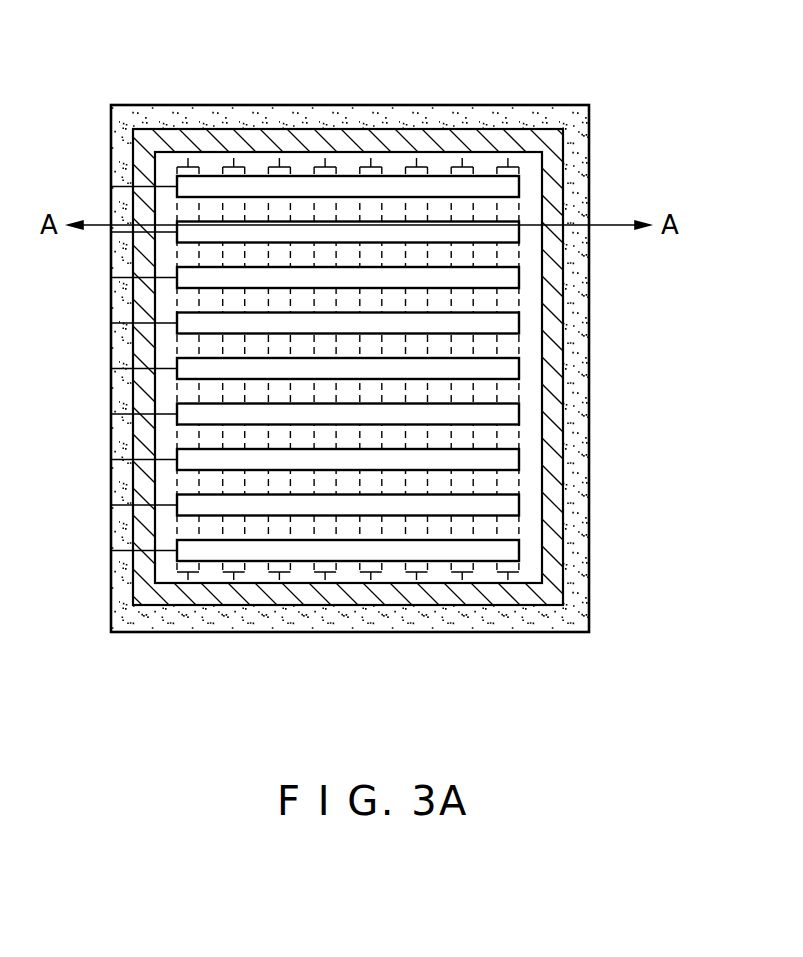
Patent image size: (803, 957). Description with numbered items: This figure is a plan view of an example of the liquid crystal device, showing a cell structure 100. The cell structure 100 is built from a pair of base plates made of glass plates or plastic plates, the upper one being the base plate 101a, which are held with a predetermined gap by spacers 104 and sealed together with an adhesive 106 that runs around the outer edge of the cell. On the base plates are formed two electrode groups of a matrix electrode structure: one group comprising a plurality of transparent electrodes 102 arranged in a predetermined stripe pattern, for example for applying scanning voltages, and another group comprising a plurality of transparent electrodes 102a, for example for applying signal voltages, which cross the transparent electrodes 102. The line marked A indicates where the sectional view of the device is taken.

The cell structure 100 is at (418, 88).
The base plate 101a is at (530, 195).
The transparent electrodes 102 is at (510, 255).
The transparent electrodes 102a is at (259, 187).
The spacers 104 is at (497, 140).
The adhesive 106 is at (583, 497).